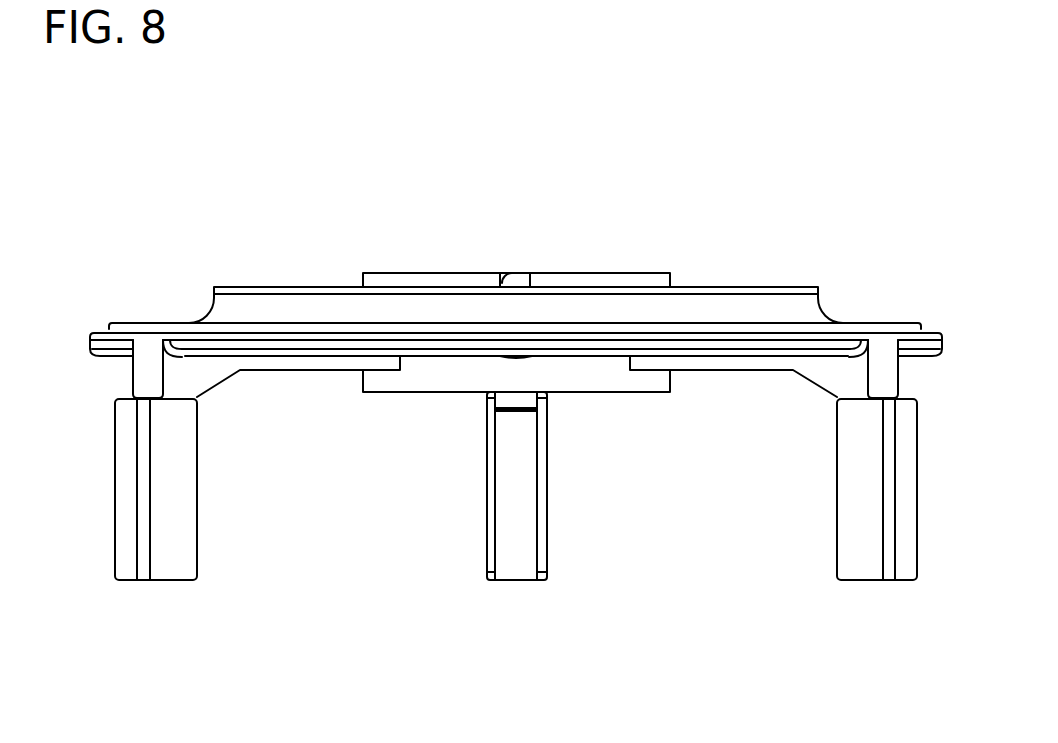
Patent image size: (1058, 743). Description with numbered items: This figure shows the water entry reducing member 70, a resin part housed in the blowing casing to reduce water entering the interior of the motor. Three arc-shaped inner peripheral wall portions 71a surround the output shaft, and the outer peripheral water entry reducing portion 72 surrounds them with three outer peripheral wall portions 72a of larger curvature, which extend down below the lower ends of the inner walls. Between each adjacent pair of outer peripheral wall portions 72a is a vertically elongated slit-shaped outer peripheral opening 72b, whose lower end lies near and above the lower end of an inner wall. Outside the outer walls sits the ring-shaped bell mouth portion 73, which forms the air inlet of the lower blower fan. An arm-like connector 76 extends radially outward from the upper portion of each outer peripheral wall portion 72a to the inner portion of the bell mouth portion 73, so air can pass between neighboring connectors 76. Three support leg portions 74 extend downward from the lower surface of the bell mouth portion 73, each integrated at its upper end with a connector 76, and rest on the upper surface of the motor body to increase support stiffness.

The water entry reducing member 70 is at (516, 363).
The inner peripheral wall portion 71a is at (523, 280).
The outer peripheral water entry reducing portion 72 is at (506, 217).
The outer peripheral wall portion 72a is at (390, 278).
The outer peripheral opening 72b is at (536, 217).
The bell mouth portion 73 is at (820, 307).
The support leg portion 74 is at (197, 503).
The connector 76 is at (302, 371).